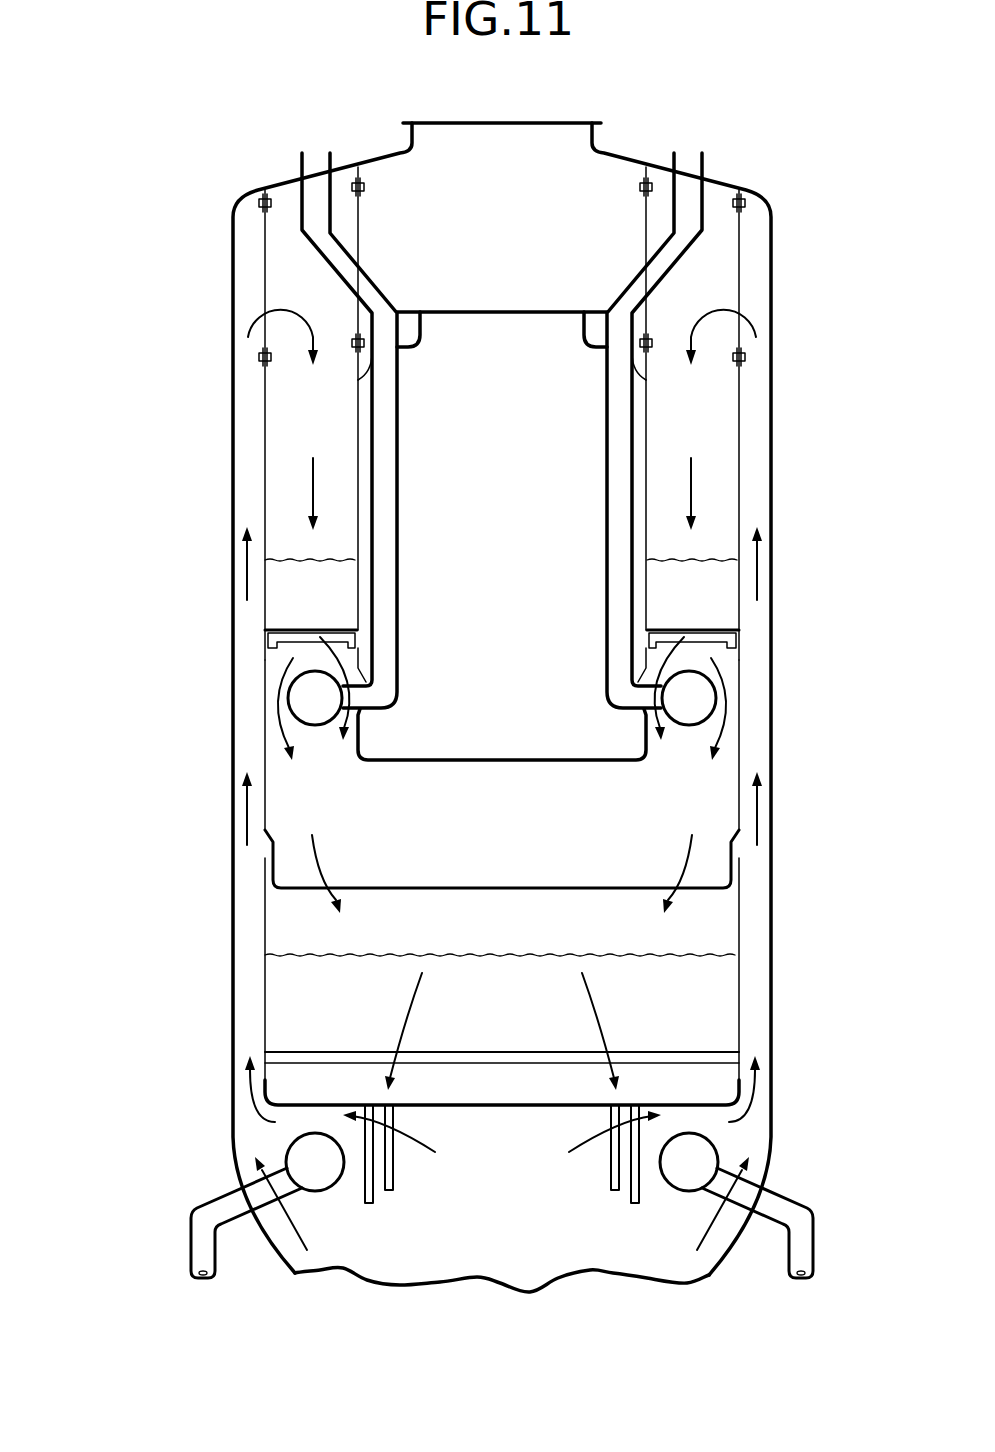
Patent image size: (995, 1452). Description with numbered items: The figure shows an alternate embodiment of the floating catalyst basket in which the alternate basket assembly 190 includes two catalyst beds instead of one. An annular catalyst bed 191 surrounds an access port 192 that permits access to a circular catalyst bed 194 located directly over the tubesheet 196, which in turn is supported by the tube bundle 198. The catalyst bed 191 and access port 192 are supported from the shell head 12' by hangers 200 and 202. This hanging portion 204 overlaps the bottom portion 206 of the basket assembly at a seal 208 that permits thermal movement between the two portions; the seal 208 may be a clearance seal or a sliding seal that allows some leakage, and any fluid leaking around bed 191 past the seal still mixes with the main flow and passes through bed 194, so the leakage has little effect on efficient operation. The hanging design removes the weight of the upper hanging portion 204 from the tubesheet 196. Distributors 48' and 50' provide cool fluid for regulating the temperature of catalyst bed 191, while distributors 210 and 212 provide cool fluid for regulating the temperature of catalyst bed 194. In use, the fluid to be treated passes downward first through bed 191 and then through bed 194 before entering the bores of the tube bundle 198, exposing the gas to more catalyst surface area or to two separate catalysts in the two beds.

The shell head 12' is at (536, 707).
The distributor 48' is at (261, 1193).
The distributor 50' is at (750, 1194).
The alternate basket assembly 190 is at (762, 895).
The catalyst bed 191 is at (297, 598).
The access port 192 is at (357, 448).
The catalyst bed 194 is at (302, 1000).
The tubesheet 196 is at (457, 1108).
The bundle 198 is at (368, 1205).
The hanger 200 is at (265, 250).
The hanger 202 is at (358, 213).
The hanging portion 204 is at (263, 730).
The bottom portion 206 is at (263, 978).
The seal 208 is at (265, 875).
The distributor 210 is at (283, 685).
The distributor 212 is at (712, 677).